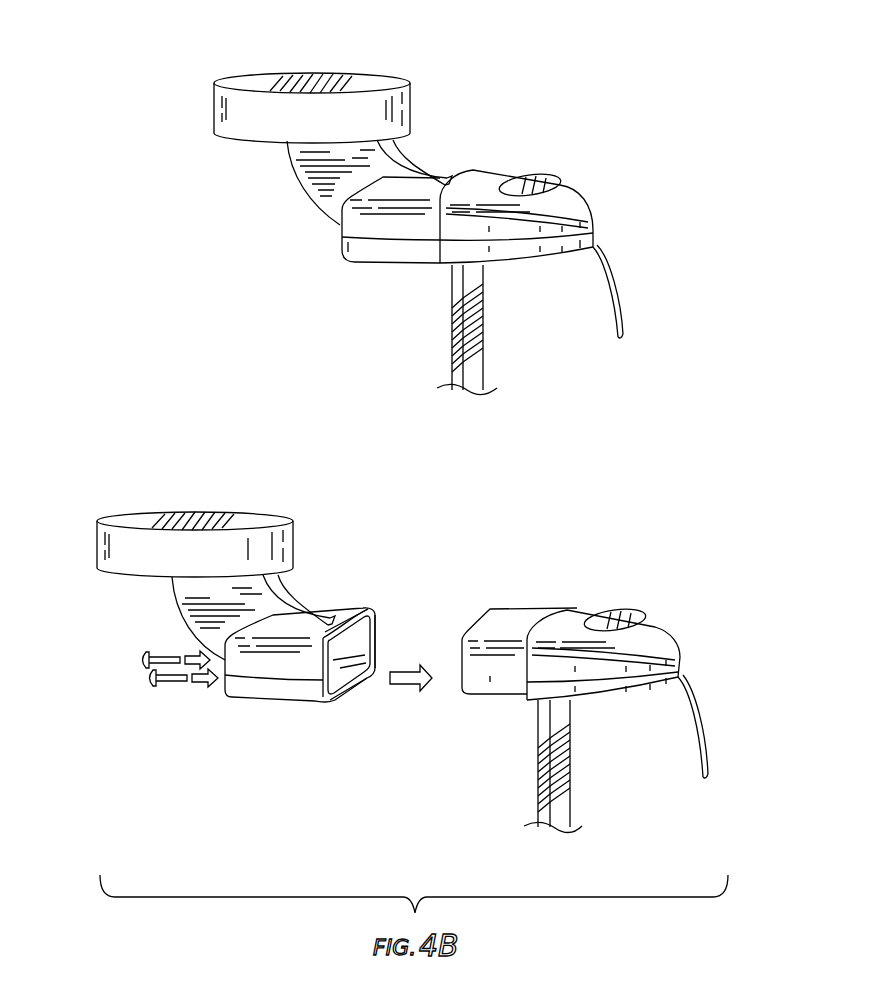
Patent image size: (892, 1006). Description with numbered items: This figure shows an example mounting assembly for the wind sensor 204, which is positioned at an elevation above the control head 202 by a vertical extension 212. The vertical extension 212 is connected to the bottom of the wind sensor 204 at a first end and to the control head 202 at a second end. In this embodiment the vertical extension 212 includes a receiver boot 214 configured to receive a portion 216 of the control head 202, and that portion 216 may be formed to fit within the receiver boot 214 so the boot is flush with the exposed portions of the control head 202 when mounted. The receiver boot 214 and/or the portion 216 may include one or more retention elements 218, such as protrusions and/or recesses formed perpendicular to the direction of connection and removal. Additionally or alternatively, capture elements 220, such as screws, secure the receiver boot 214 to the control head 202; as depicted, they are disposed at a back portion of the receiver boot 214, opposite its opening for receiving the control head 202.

The control head 202 is at (577, 197).
The wind sensor 204 is at (255, 105).
The vertical extension 212 is at (317, 153).
The receiver boot 214 is at (373, 245).
The portion of the control head 216 is at (492, 685).
The retention elements 218 is at (353, 643).
The capture elements 220 is at (157, 688).